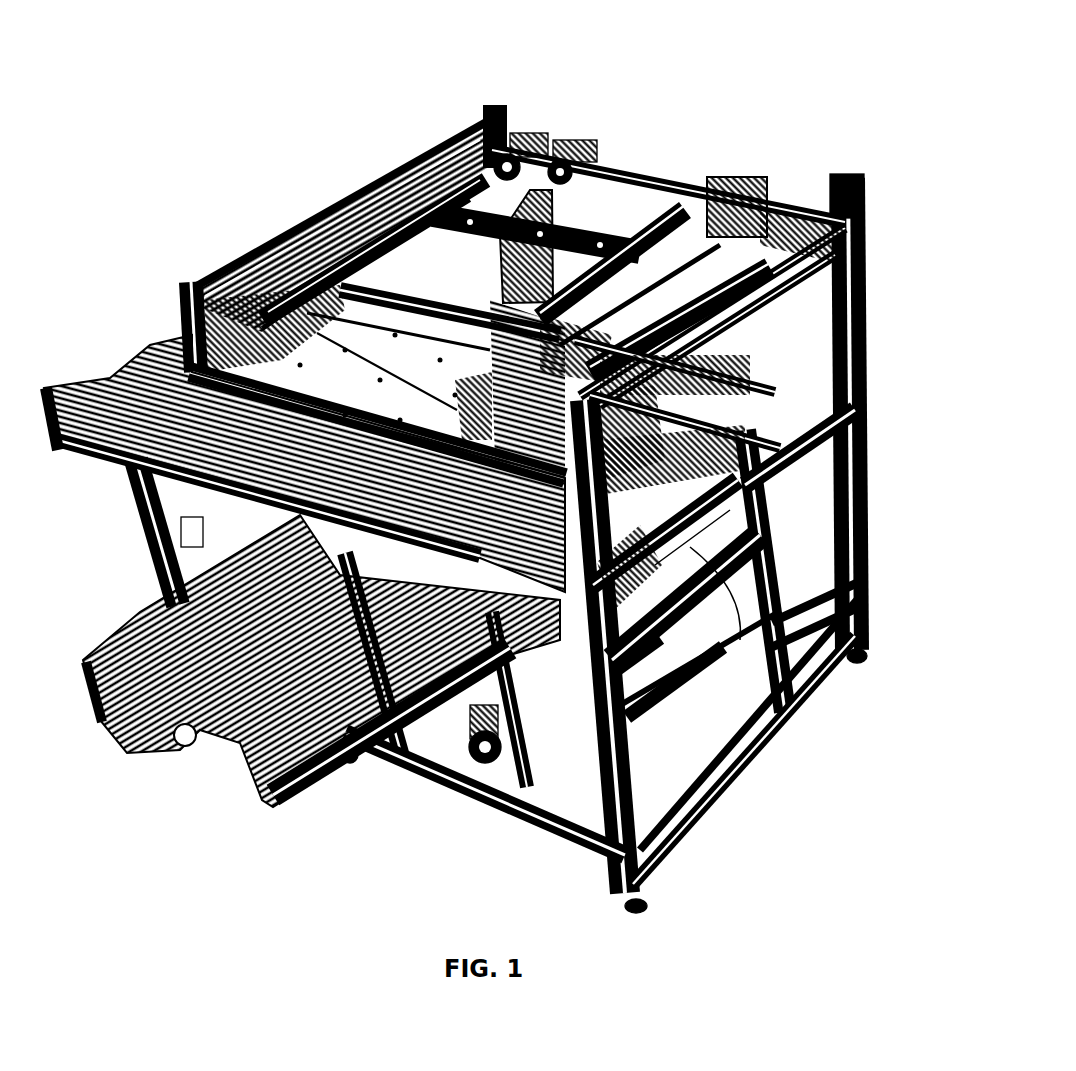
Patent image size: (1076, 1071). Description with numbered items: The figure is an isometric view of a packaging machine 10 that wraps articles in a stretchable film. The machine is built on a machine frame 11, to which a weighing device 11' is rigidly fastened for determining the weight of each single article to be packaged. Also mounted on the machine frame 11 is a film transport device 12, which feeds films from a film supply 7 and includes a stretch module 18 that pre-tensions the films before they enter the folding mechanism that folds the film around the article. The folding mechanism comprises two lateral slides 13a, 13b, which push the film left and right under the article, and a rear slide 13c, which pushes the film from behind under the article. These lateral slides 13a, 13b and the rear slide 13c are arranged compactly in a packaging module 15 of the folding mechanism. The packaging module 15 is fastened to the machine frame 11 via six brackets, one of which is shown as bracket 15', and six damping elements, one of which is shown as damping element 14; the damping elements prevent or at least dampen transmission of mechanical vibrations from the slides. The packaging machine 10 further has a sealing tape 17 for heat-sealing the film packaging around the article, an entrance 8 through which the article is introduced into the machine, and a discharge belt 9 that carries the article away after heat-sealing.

The packaging machine 10 is at (925, 138).
The film supply 7 is at (723, 787).
The entrance 8 is at (212, 753).
The discharge belt 9 is at (148, 352).
The machine frame 11 is at (853, 466).
The weighing device 11' is at (485, 820).
The film transport device 12 is at (830, 670).
The lateral slide 13a is at (330, 203).
The lateral slide 13b is at (622, 290).
The rear slide 13c is at (568, 137).
The damping element 14 is at (698, 352).
The packaging module 15 is at (668, 163).
The bracket 15' is at (774, 302).
The sealing tape 17 is at (277, 240).
The stretch module 18 is at (716, 373).